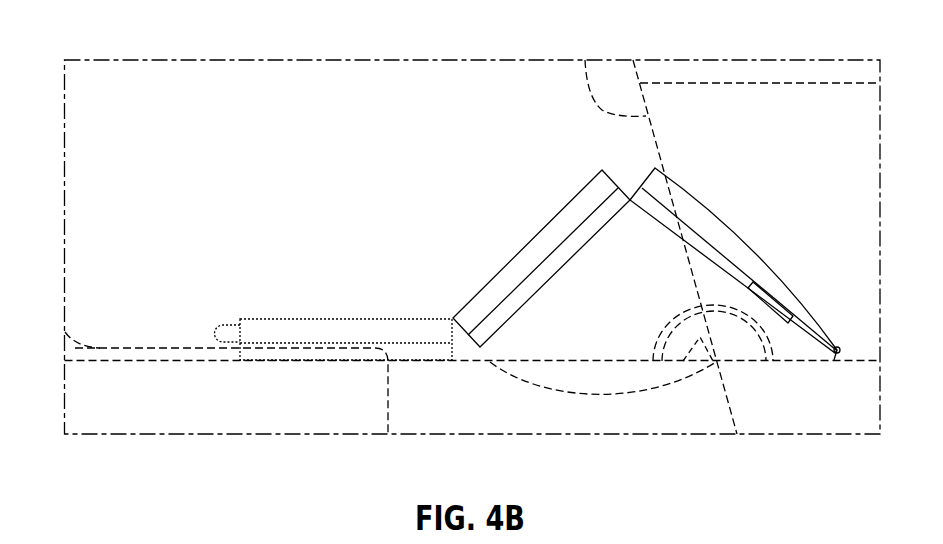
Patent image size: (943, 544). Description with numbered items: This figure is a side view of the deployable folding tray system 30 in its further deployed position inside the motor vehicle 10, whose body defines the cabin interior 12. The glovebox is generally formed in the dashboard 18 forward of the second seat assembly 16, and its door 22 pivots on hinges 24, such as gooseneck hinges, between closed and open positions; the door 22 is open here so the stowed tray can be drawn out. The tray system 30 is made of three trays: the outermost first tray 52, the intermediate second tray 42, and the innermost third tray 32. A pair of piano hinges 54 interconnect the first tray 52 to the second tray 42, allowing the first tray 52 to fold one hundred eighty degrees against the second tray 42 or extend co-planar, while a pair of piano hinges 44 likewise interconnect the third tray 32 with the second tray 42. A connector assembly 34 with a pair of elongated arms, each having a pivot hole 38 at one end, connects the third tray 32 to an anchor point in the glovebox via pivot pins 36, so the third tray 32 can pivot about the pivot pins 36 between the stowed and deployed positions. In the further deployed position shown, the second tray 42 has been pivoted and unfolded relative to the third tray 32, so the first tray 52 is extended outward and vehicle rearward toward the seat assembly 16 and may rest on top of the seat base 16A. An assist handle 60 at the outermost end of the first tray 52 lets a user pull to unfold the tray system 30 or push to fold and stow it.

The motor vehicle 10 is at (842, 60).
The cabin interior 12 is at (437, 143).
The second seat assembly 16 is at (182, 348).
The seat base 16A is at (137, 359).
The dashboard 18 is at (585, 60).
The door 22 is at (598, 380).
The hinges 24 is at (658, 148).
The deployable folding tray system 30 is at (750, 228).
The third tray 32 is at (777, 276).
The connector assembly 34 is at (807, 320).
The pivot pins 36 is at (838, 353).
The pivot hole 38 is at (840, 347).
The second tray 42 is at (508, 313).
The piano hinges 44 is at (630, 198).
The first tray 52 is at (262, 340).
The piano hinges 54 is at (455, 322).
The assist handle 60 is at (222, 333).